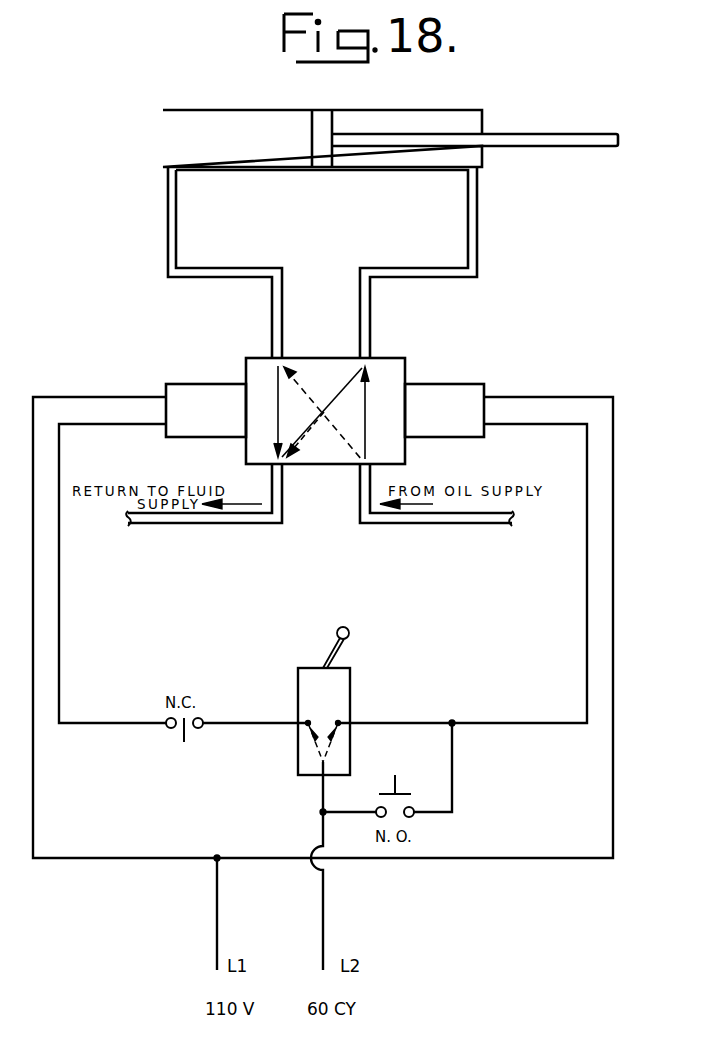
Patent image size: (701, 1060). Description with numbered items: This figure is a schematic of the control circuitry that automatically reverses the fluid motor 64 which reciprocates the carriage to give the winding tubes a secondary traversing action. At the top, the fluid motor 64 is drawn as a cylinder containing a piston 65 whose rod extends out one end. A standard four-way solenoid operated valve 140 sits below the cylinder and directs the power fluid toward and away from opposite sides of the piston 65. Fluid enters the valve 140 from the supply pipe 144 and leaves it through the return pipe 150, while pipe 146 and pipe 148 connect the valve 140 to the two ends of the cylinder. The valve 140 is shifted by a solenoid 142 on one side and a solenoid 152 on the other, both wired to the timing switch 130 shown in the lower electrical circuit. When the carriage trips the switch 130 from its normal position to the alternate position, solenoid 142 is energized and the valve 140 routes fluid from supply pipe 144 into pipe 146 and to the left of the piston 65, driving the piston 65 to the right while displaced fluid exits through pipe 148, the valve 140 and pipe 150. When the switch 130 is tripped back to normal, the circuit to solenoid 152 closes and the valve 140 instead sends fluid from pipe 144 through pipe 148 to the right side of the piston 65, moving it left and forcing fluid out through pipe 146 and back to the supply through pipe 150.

The fluid motor 64 is at (405, 108).
The piston 65 is at (318, 168).
The pipe 146 is at (195, 278).
The pipe 148 is at (478, 243).
The four-way solenoid operated valve 140 is at (327, 468).
The solenoid 142 is at (183, 438).
The solenoid 152 is at (457, 437).
The pipe 150 is at (240, 524).
The supply pipe 144 is at (443, 524).
The timing switch 130 is at (351, 673).